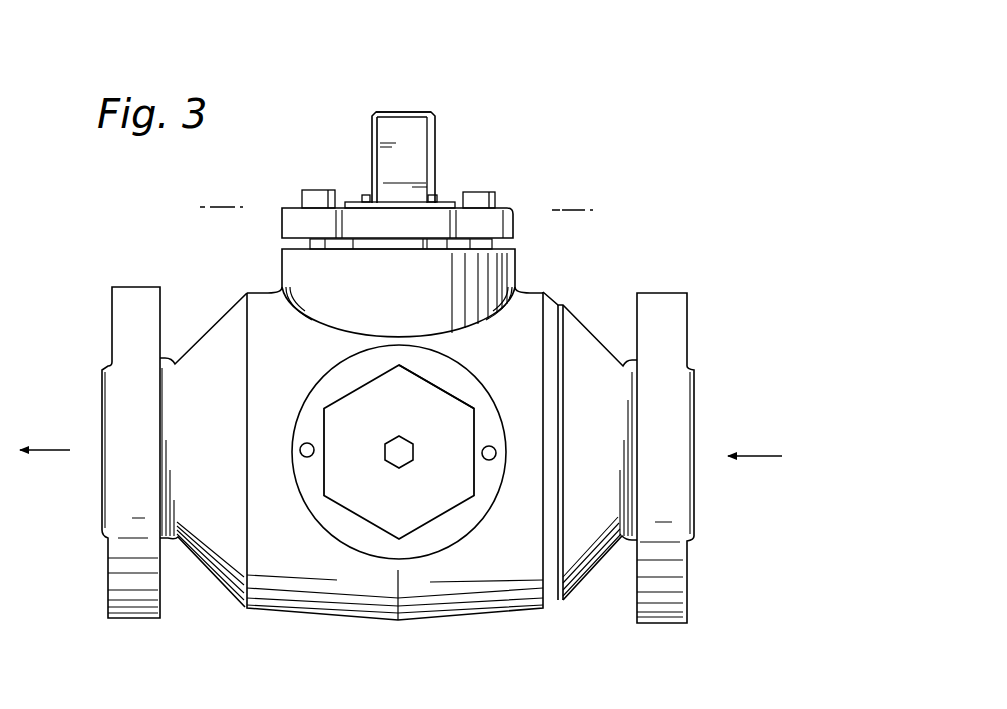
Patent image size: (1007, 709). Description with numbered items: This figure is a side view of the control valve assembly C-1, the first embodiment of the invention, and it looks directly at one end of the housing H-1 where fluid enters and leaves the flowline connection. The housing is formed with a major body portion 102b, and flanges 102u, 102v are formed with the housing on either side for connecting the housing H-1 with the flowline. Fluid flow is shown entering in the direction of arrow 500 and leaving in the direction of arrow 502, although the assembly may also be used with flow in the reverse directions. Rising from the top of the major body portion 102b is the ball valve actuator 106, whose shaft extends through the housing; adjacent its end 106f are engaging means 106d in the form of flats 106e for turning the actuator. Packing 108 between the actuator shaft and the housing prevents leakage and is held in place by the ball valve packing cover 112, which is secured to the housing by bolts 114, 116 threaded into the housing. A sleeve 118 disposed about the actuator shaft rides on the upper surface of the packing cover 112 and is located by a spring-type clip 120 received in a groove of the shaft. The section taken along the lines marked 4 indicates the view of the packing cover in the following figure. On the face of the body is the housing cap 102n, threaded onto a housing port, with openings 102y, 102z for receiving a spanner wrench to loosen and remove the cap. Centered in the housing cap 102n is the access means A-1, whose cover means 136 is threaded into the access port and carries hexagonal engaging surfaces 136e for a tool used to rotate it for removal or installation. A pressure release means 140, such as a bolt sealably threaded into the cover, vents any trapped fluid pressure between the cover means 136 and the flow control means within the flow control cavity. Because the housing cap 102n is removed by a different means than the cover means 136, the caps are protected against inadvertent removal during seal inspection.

The ball valve actuator 106 is at (444, 116).
The engaging means 106d is at (437, 138).
The flats 106e is at (404, 136).
The end of ball valve actuator 106f is at (402, 111).
The clip 120 is at (363, 193).
The sleeve 118 is at (350, 200).
The bolt 114 is at (317, 189).
The bolt 116 is at (473, 191).
The ball valve packing cover 112 is at (280, 227).
The packing 108 is at (402, 243).
The major body portion 102b is at (306, 363).
The housing cap 102n is at (307, 480).
The cover means 136 is at (454, 391).
The engaging surfaces 136e is at (418, 377).
The pressure release means 140 is at (402, 435).
The opening 102y is at (300, 451).
The opening 102z is at (497, 453).
The flange 102u is at (132, 620).
The flange 102v is at (663, 628).
The arrow 502 is at (62, 410).
The arrow 500 is at (762, 455).
The control valve assembly C-1 is at (47, 198).
The housing H-1 is at (108, 292).
The access means A-1 is at (341, 394).
The section line for FIG. 4 is at (222, 205).